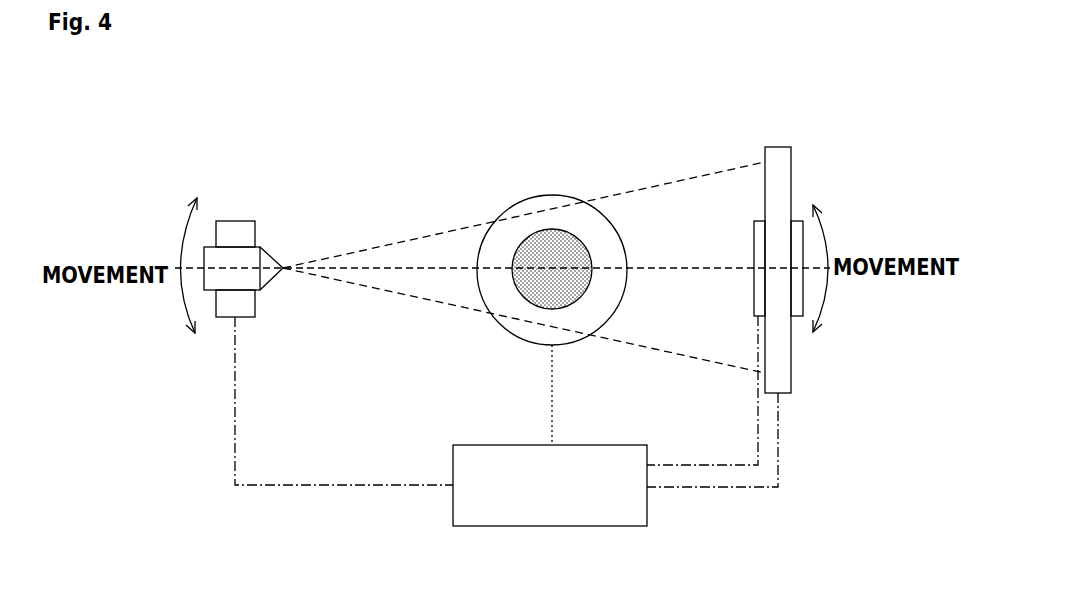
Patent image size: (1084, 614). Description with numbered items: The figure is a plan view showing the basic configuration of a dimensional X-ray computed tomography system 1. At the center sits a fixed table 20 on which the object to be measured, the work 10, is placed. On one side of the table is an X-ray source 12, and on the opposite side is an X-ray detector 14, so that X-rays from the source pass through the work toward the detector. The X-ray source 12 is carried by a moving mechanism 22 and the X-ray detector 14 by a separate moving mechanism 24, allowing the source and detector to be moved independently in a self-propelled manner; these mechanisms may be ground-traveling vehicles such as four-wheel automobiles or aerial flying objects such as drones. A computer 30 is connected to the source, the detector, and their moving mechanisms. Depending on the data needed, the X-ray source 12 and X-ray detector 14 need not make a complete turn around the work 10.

The dimensional X-ray computed tomography system 1 is at (458, 126).
The work 10 is at (556, 262).
The X-ray source 12 is at (258, 238).
The X-ray detector 14 is at (777, 147).
The fixed table 20 is at (545, 195).
The moving mechanism 22 is at (243, 221).
The moving mechanism 24 is at (797, 220).
The computer 30 is at (637, 526).